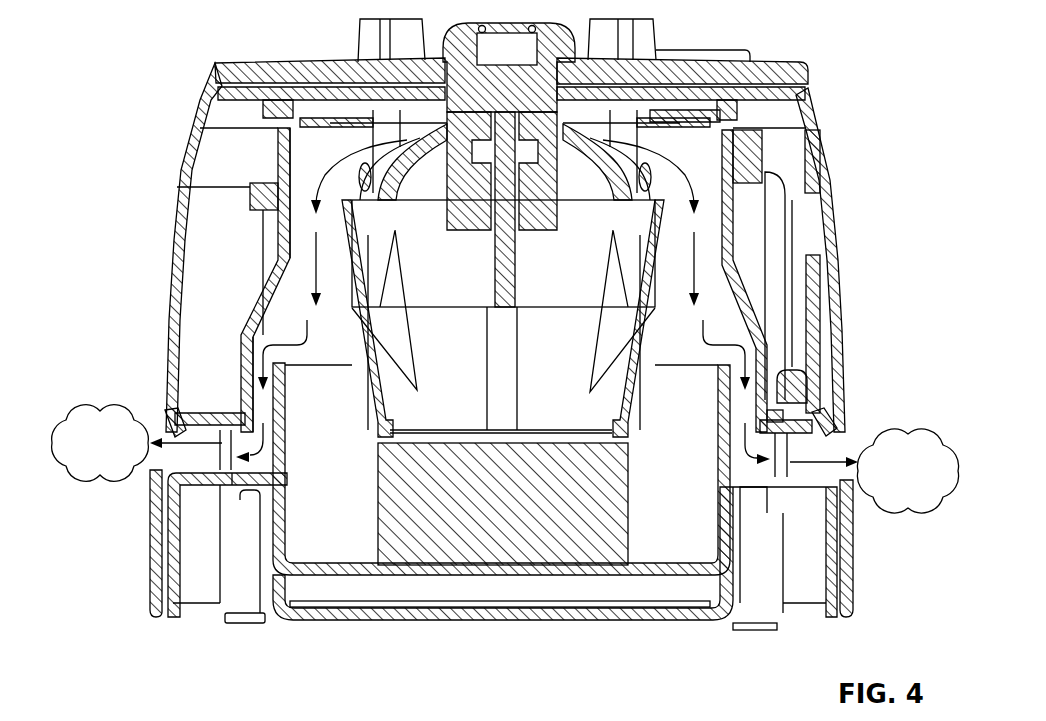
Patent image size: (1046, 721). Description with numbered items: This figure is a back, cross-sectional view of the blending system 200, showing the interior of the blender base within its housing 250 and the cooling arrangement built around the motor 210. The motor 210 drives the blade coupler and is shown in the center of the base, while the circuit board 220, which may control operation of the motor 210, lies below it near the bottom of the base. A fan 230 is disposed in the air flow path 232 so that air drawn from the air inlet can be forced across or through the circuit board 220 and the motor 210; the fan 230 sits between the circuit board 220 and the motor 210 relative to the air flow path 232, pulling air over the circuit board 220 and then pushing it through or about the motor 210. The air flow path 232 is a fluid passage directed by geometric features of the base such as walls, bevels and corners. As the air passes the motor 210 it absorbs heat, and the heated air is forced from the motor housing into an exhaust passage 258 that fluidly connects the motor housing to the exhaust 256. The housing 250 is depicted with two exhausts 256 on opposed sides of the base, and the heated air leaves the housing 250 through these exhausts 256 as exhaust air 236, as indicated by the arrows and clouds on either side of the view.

The blending system 200 is at (168, 54).
The housing 250 is at (187, 142).
The exhaust 256 is at (277, 233).
The exhaust passage 258 is at (283, 310).
The exhaust air 236 is at (210, 452).
The air flow path 232 is at (283, 532).
The motor 210 is at (387, 445).
The fan 230 is at (495, 527).
The circuit board 220 is at (660, 606).